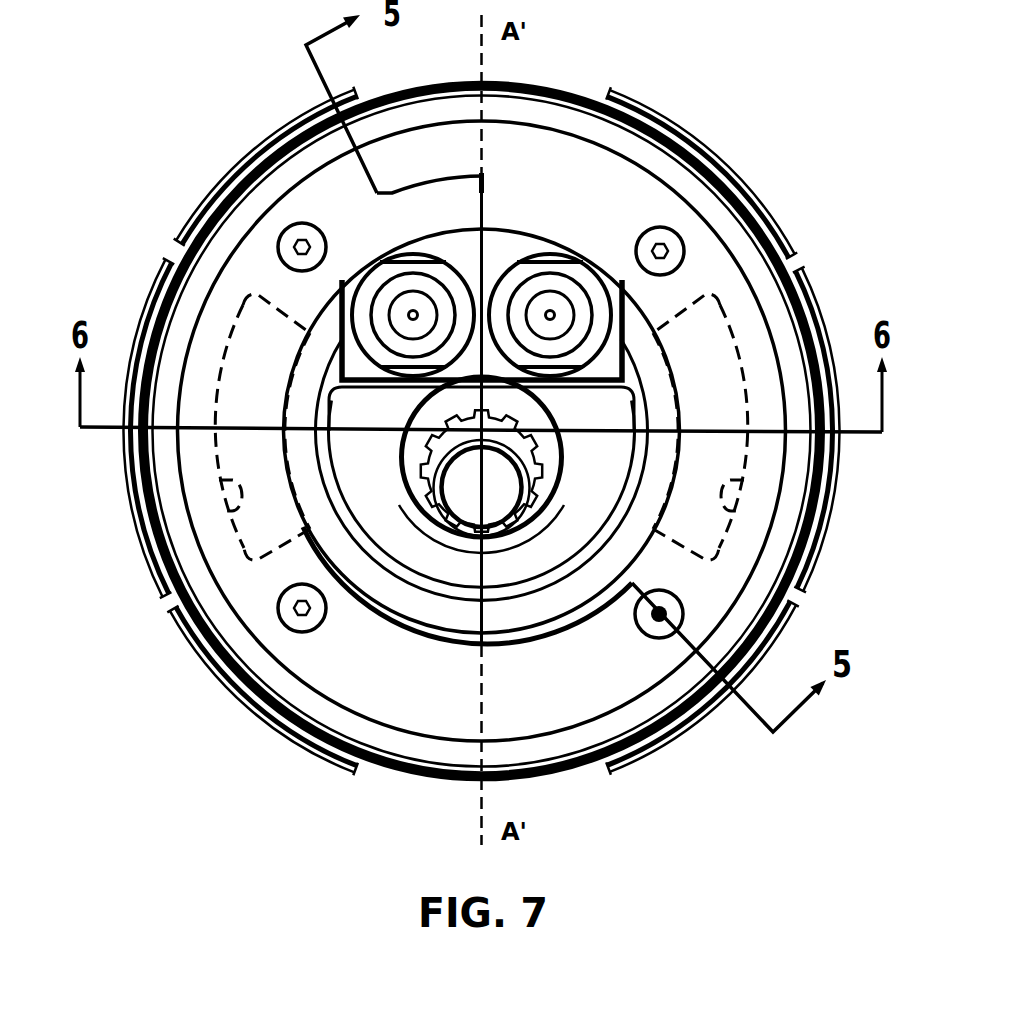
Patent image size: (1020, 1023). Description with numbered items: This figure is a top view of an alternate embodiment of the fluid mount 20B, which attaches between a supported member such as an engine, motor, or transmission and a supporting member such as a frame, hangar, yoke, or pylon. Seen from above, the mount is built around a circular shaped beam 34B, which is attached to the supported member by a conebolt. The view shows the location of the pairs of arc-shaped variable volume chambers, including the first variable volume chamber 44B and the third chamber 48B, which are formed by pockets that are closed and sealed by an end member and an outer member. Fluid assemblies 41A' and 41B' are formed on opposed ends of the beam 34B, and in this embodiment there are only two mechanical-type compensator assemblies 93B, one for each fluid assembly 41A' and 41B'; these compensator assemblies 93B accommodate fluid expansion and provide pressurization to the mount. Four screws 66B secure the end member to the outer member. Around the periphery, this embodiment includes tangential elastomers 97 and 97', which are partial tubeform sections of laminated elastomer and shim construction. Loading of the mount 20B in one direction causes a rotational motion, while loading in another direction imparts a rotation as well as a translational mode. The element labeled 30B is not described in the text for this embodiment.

The fluid mount 20B is at (680, 68).
The tangential elastomer 97 is at (483, 450).
The tangential elastomer 97' is at (489, 412).
The screws 66B is at (302, 224).
The compensator assembly 93B is at (413, 257).
The shaft 30B is at (552, 452).
The fluid assembly 41A' is at (195, 487).
The fluid assembly 41B' is at (760, 359).
The first variable volume chamber 44B is at (152, 492).
The third chamber 48B is at (818, 500).
The beam 34B is at (777, 571).